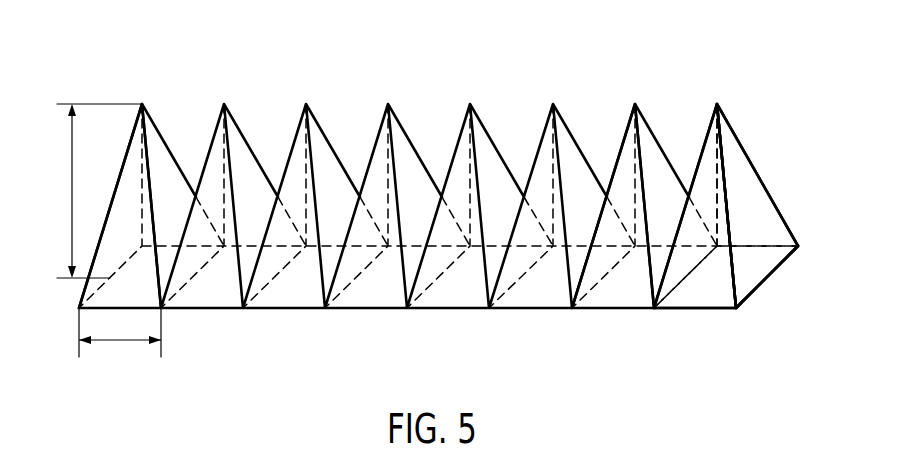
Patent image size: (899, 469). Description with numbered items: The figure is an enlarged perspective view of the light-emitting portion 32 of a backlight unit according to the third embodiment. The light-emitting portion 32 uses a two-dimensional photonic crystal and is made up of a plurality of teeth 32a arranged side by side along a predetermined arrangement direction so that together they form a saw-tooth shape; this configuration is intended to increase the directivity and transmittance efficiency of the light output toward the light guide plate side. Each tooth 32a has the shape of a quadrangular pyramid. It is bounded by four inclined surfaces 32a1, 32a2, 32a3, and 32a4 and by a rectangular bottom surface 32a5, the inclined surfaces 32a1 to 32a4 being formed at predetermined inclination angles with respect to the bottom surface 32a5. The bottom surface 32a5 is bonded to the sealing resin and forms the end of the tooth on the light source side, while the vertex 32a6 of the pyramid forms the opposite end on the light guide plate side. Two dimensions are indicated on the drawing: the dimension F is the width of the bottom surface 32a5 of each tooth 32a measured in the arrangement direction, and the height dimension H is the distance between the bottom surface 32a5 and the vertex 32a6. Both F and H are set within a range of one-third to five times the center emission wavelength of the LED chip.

The light-emitting portion 32 is at (513, 104).
The tooth 32a is at (142, 104).
The inclined surface 32a1 is at (705, 272).
The inclined surface 32a2 is at (750, 197).
The inclined surface 32a3 is at (732, 160).
The inclined surface 32a4 is at (707, 177).
The bottom surface 32a5 is at (750, 268).
The vertex 32a6 is at (635, 104).
The height dimension H is at (72, 190).
The dimension of the bottom surface in the arrangement direction F is at (113, 342).